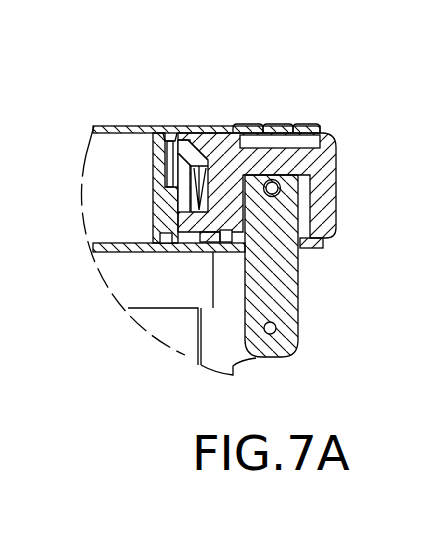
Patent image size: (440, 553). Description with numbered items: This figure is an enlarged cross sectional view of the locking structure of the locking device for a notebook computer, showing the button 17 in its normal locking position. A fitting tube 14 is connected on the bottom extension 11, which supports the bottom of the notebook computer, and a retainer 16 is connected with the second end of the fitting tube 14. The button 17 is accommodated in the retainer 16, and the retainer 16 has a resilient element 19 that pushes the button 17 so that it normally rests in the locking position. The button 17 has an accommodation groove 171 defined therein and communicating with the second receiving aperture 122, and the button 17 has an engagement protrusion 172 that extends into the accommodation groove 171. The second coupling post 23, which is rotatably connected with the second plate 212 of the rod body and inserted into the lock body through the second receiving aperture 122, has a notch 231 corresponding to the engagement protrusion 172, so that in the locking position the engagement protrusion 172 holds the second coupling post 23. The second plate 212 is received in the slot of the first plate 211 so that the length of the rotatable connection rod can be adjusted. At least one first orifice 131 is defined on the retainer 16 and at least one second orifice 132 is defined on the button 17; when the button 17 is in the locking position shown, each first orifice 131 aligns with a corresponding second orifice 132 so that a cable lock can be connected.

The bottom extension 11 is at (125, 283).
The fitting tube 14 is at (120, 127).
The retainer 16 is at (160, 180).
The button 17 is at (318, 203).
The resilient element 19 is at (183, 173).
The second coupling post 23 is at (290, 268).
The second receiving aperture 122 is at (320, 243).
The first orifice 131 is at (243, 128).
The second orifice 132 is at (230, 128).
The accommodation groove 171 is at (240, 172).
The engagement protrusion 172 is at (300, 195).
The first plate 211 is at (165, 340).
The second plate 212 is at (234, 364).
The notch 231 is at (160, 246).